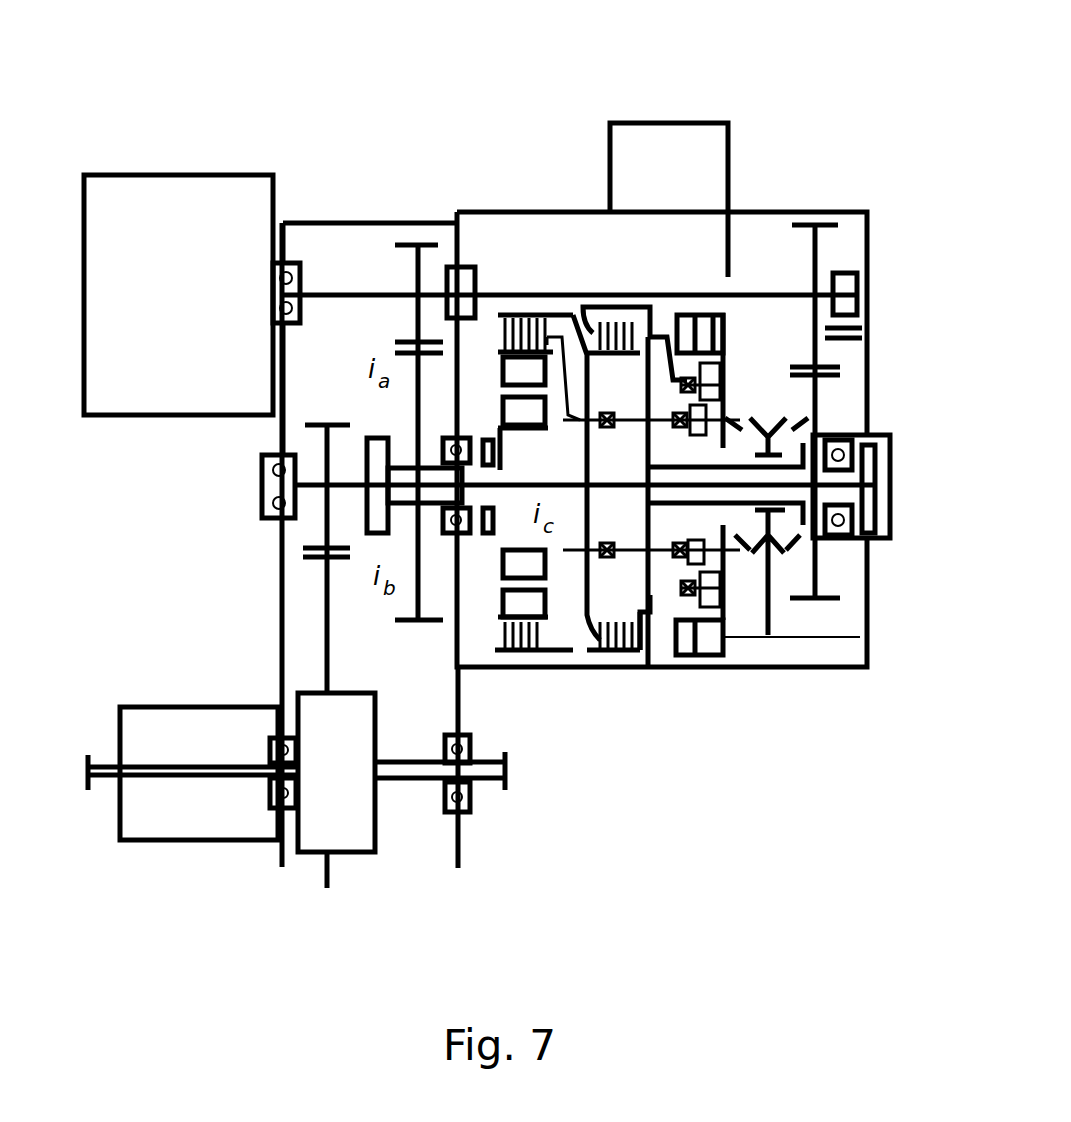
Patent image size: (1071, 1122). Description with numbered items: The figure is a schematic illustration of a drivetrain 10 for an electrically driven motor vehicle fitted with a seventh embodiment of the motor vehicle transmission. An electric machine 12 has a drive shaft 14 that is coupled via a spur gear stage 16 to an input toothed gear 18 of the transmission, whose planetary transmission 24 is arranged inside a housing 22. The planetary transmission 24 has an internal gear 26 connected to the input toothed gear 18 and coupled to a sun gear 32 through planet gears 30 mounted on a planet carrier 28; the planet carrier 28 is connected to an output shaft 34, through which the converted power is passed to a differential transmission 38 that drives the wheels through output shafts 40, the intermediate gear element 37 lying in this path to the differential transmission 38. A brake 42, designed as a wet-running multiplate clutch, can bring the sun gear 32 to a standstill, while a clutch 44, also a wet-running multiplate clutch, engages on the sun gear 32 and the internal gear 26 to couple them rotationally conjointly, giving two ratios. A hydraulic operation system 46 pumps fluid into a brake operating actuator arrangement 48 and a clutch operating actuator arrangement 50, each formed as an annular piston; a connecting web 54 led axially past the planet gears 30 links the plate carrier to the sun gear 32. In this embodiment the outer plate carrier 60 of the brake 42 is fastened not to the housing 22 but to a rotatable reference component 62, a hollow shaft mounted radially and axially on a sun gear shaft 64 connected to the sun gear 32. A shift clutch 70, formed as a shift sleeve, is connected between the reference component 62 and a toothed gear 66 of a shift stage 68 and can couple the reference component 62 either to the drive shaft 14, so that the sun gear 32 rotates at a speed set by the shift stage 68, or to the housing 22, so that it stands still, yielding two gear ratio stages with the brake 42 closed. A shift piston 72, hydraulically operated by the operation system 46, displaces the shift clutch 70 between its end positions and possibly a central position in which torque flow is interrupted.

The drivetrain 10 is at (830, 80).
The electric machine 12 is at (135, 204).
The drive shaft 14 is at (323, 293).
The spur gear stage 16 is at (408, 340).
The input toothed gear 18 is at (420, 400).
The housing 22 is at (865, 255).
The planetary transmission 24 is at (505, 600).
The internal gear 26 is at (510, 430).
The planet carrier 28 is at (520, 320).
The planet gears 30 is at (490, 345).
The sun gear 32 is at (523, 452).
The output shaft 34 is at (308, 485).
The gear wheel 37 is at (318, 565).
The differential transmission 38 is at (325, 815).
The output shafts 40 is at (100, 775).
The brake 42 is at (627, 637).
The clutch 44 is at (505, 640).
The hydraulic operation system 46 is at (656, 147).
The brake operating actuator arrangement 48 is at (705, 375).
The clutch operating actuator arrangement 50 is at (702, 417).
The connecting web 54 is at (585, 462).
The outer plate carrier 60 is at (615, 658).
The reference component 62 is at (695, 665).
The sun gear shaft 64 is at (747, 485).
The toothed gear 66 is at (815, 400).
The shift stage 68 is at (845, 358).
The shift clutch 70 is at (770, 453).
The shift piston 72 is at (703, 637).